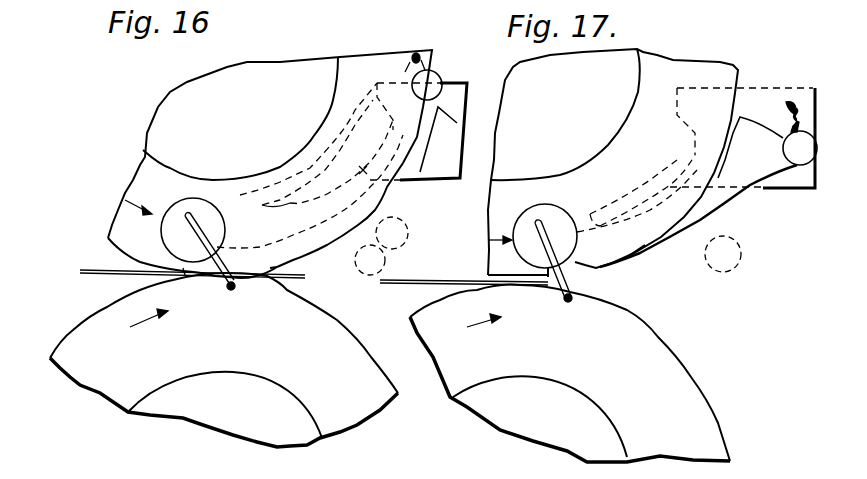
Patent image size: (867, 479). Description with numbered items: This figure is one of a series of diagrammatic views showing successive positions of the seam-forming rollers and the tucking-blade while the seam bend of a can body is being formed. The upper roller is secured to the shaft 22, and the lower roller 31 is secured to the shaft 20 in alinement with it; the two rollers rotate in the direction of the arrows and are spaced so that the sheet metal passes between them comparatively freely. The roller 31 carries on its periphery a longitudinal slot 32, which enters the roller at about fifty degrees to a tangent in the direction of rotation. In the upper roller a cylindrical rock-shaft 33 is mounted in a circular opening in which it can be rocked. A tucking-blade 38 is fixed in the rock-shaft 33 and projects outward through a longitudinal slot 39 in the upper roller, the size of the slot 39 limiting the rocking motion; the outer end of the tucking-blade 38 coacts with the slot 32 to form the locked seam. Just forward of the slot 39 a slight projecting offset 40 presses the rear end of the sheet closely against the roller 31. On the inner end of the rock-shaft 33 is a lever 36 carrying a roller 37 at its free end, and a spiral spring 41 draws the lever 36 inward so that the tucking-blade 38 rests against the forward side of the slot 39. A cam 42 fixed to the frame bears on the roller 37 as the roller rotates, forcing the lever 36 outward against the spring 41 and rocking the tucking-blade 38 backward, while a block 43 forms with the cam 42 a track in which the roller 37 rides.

In FIG. 16, the shaft 20 is at (225, 373).
In FIG. 17, the shaft 20 is at (540, 385).
In FIG. 16, the shaft 22 is at (270, 164).
In FIG. 17, the shaft 22 is at (613, 163).
In FIG. 16, the roller 31 is at (327, 323).
In FIG. 17, the roller 31 is at (658, 337).
In FIG. 16, the longitudinal slot 32 is at (236, 288).
In FIG. 17, the longitudinal slot 32 is at (570, 298).
In FIG. 17, the rock-shaft 33 is at (551, 212).
In FIG. 16, the lever 36 is at (313, 225).
In FIG. 17, the lever 36 is at (685, 250).
In FIG. 16, the roller 37 is at (437, 77).
In FIG. 16, the tucking-blade 38 is at (218, 285).
In FIG. 17, the tucking-blade 38 is at (543, 242).
In FIG. 16, the longitudinal slot 39 is at (200, 270).
In FIG. 17, the longitudinal slot 39 is at (557, 288).
In FIG. 16, the projecting offset 40 is at (270, 268).
In FIG. 17, the projecting offset 40 is at (640, 247).
In FIG. 17, the spiral spring 41 is at (788, 108).
In FIG. 16, the cam 42 is at (365, 170).
In FIG. 17, the cam 42 is at (679, 166).
In FIG. 16, the block 43 is at (422, 170).
In FIG. 17, the block 43 is at (783, 180).